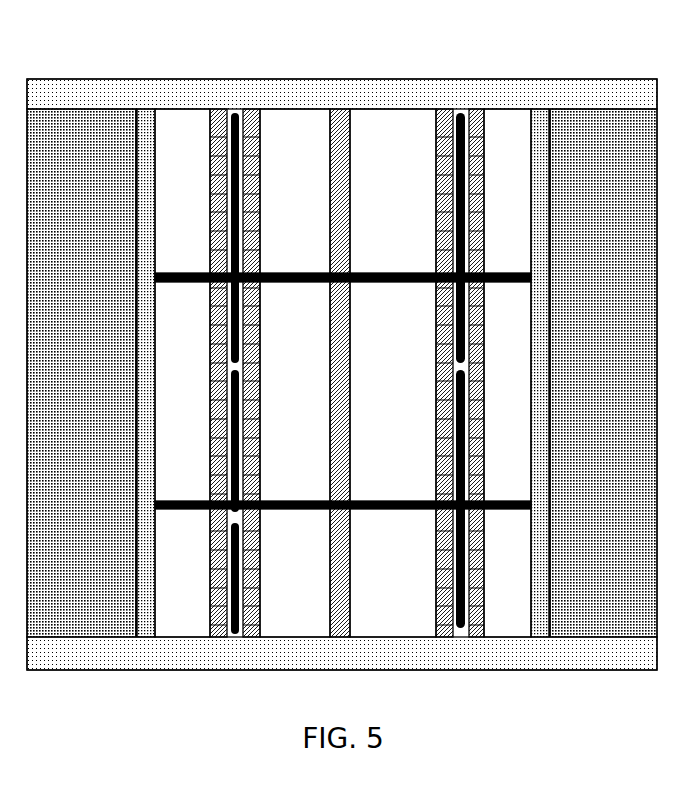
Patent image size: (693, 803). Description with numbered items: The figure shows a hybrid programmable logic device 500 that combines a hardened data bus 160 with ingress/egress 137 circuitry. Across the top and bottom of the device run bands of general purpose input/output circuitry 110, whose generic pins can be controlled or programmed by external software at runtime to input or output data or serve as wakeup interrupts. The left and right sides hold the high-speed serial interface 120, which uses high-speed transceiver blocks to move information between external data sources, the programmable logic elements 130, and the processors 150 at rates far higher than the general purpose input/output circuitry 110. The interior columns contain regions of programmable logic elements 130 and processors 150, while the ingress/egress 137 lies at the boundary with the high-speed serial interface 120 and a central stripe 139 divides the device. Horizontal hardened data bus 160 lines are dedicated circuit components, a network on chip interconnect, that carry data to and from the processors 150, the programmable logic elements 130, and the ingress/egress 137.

The hybrid programmable logic device 500 is at (325, 48).
The general purpose input/output circuitry 110 is at (327, 101).
The high-speed serial interface 120 is at (63, 380).
The programmable logic elements 130 is at (168, 160).
The ingress/egress 137 is at (342, 373).
The central isolation stripe 139 is at (340, 373).
The processors 150 is at (225, 532).
The hardened data bus 160 is at (274, 272).